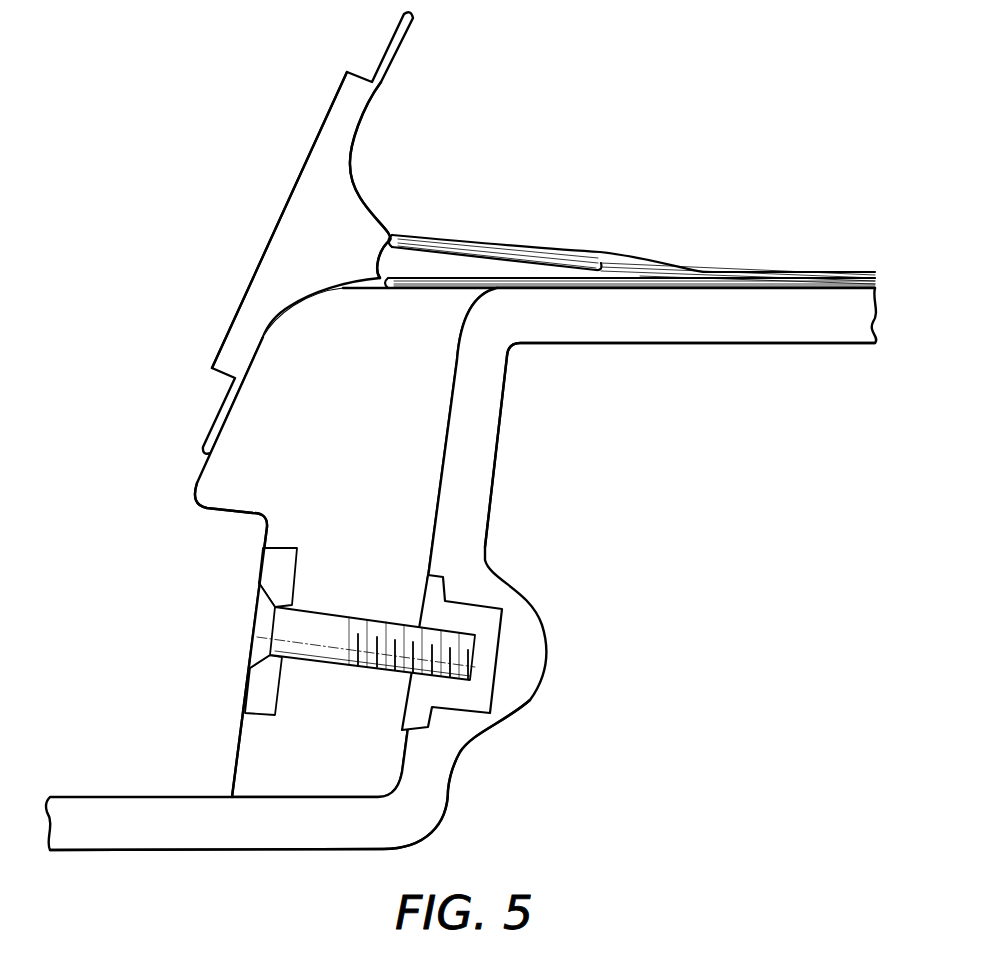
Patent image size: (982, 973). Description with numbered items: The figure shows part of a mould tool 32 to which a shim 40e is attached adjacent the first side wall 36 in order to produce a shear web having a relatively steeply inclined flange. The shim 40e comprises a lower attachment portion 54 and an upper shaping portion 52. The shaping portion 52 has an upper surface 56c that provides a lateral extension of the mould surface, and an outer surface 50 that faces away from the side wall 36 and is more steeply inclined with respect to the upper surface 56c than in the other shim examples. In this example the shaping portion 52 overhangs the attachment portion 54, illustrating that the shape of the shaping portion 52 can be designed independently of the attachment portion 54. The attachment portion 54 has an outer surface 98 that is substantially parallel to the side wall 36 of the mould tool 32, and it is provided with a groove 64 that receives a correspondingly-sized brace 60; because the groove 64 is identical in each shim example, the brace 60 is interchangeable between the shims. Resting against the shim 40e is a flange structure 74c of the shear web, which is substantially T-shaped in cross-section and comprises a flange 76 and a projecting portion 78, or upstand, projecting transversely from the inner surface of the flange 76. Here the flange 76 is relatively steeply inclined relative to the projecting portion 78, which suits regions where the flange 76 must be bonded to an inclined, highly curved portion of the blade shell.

The flange structure 74c is at (302, 78).
The flange 76 is at (266, 270).
The upper surface 56c is at (390, 240).
The projecting portion 78 is at (542, 268).
The outer surface 50 is at (214, 431).
The shaping portion 52 is at (282, 461).
The shim 40e is at (427, 400).
The first side wall 36 is at (477, 482).
The mould tool 32 is at (445, 778).
The brace 60 is at (277, 570).
The groove 64 is at (293, 571).
The attachment portion 54 is at (214, 634).
The outer surface 98 is at (233, 770).